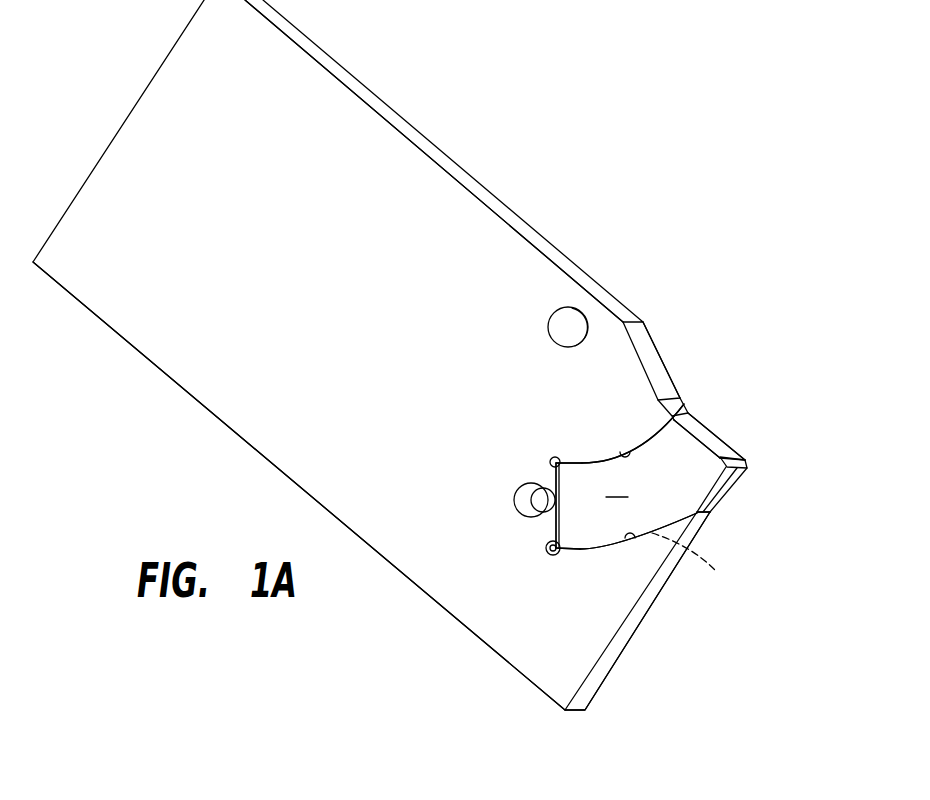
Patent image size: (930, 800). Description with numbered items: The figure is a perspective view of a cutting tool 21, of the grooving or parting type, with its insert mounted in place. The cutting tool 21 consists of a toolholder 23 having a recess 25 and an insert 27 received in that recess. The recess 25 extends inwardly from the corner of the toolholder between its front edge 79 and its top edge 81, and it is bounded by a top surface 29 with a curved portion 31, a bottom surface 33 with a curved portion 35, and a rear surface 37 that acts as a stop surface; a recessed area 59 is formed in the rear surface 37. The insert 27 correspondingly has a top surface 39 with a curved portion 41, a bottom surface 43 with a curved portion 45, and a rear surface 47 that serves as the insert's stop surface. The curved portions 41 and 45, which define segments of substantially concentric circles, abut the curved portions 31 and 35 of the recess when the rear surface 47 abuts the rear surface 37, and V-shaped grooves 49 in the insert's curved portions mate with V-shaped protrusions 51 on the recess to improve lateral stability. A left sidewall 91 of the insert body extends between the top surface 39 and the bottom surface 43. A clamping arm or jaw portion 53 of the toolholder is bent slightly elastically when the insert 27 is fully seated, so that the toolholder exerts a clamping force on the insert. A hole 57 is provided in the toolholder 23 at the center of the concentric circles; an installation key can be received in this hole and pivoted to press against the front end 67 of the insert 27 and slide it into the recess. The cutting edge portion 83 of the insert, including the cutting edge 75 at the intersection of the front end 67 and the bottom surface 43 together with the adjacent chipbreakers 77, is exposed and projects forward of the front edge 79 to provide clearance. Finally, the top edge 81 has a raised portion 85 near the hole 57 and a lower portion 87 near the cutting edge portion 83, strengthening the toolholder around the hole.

The cutting tool 21 is at (500, 130).
The toolholder 23 is at (347, 126).
The recess 25 is at (696, 559).
The insert 27 is at (687, 451).
The top surface of the recess 29 is at (582, 466).
The curved portion of the recess top surface 31 is at (626, 452).
The bottom surface of the recess 33 is at (612, 540).
The curved portion of the recess bottom surface 35 is at (640, 543).
The rear surface of the recess 37 is at (548, 552).
The top surface of the insert 39 is at (595, 455).
The curved portion of the insert top surface 41 is at (558, 457).
The bottom surface of the insert 43 is at (598, 555).
The curved portion of the insert bottom surface 45 is at (570, 552).
The rear surface of the insert 47 is at (552, 500).
The V-shaped grooves 49 is at (686, 414).
The V-shaped protrusions 51 is at (700, 437).
The clamping arm or jaw portion 53 is at (617, 373).
The hole 57 is at (577, 322).
The recessed area 59 is at (537, 512).
The front end of the insert 67 is at (714, 448).
The cutting edge 75 is at (747, 469).
The chipbreakers 77 is at (745, 461).
The front edge of the toolholder 79 is at (590, 687).
The top edge of the toolholder 81 is at (525, 222).
The cutting edge portion 83 is at (722, 462).
The raised portion of the top edge 85 is at (497, 198).
The lower portion of the top edge 87 is at (681, 392).
The left sidewall 91 is at (626, 476).